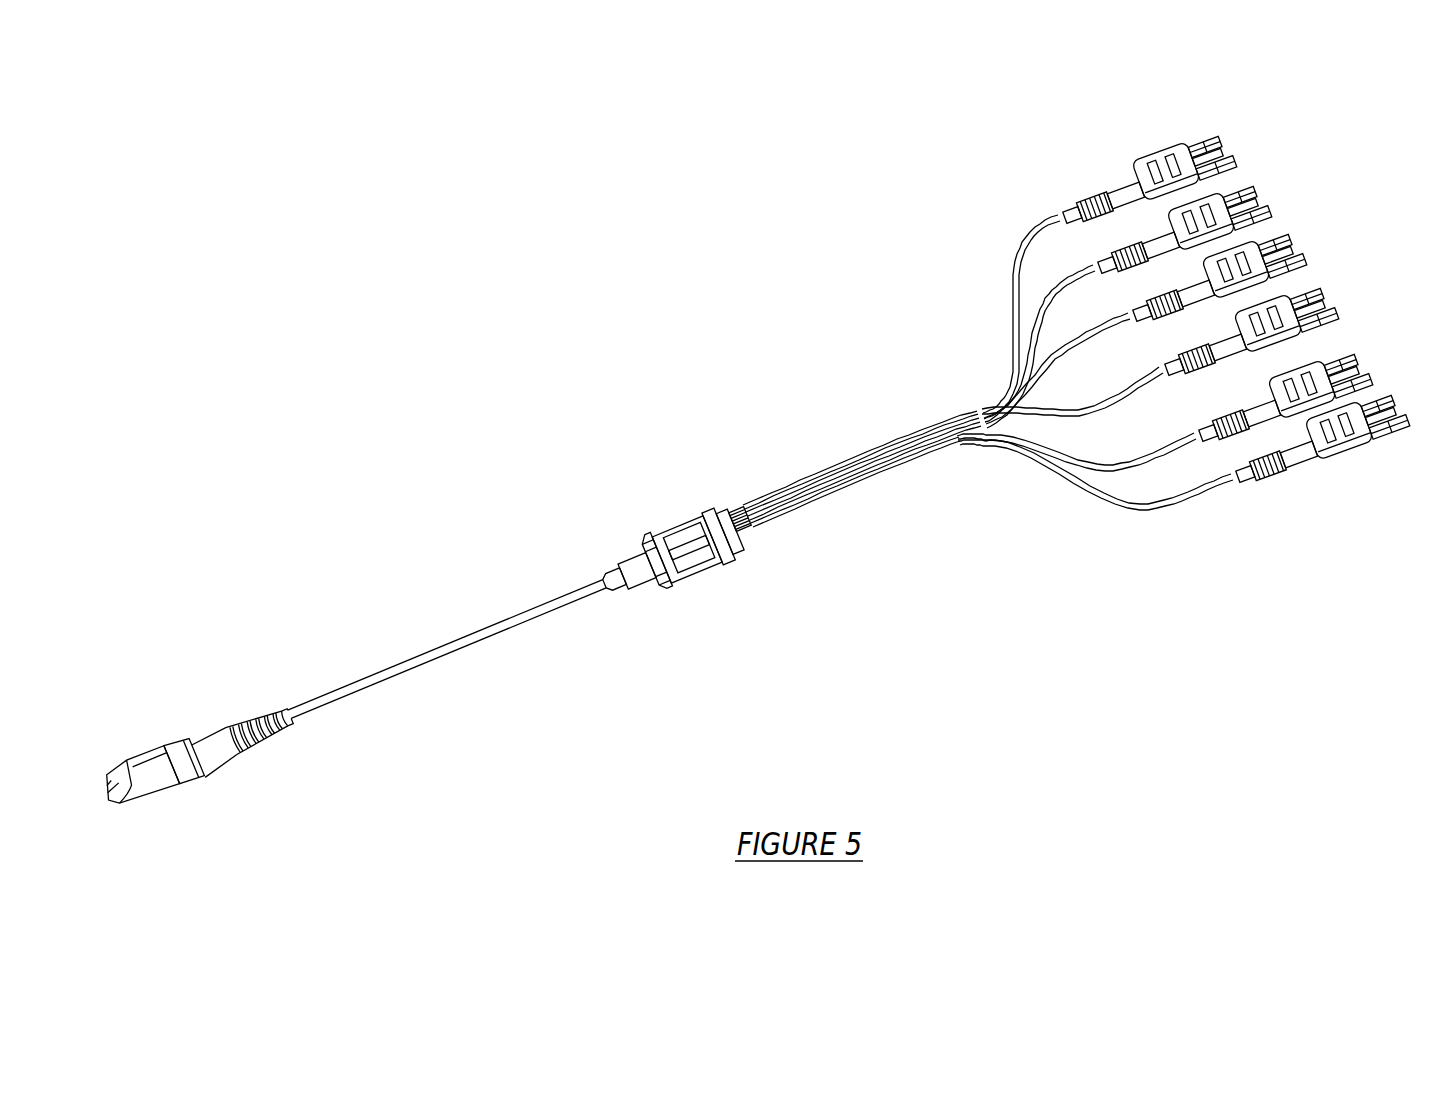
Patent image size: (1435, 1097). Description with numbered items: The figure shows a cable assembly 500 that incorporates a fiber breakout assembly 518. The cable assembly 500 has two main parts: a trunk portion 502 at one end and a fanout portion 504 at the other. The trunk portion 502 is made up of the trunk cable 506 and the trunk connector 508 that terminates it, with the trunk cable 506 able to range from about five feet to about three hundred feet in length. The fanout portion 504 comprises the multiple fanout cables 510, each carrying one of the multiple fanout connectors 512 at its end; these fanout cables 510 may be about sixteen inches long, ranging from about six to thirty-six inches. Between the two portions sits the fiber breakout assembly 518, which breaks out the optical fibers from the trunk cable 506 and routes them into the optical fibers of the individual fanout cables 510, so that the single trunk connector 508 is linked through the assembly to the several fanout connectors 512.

The cable assembly 500 is at (562, 373).
The trunk portion 502 is at (320, 584).
The fanout portion 504 is at (881, 241).
The trunk cable 506 is at (512, 628).
The trunk connector 508 is at (170, 792).
The fanout cables 510 is at (983, 472).
The fanout connectors 512 is at (1353, 489).
The fiber breakout assembly 518 is at (733, 563).